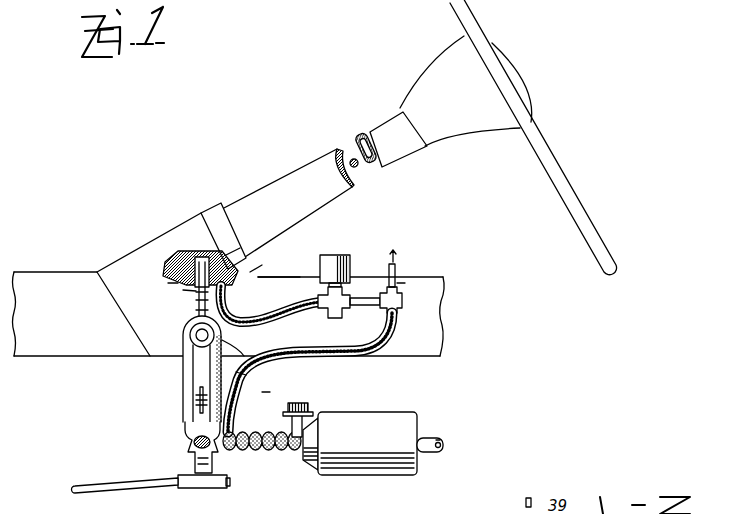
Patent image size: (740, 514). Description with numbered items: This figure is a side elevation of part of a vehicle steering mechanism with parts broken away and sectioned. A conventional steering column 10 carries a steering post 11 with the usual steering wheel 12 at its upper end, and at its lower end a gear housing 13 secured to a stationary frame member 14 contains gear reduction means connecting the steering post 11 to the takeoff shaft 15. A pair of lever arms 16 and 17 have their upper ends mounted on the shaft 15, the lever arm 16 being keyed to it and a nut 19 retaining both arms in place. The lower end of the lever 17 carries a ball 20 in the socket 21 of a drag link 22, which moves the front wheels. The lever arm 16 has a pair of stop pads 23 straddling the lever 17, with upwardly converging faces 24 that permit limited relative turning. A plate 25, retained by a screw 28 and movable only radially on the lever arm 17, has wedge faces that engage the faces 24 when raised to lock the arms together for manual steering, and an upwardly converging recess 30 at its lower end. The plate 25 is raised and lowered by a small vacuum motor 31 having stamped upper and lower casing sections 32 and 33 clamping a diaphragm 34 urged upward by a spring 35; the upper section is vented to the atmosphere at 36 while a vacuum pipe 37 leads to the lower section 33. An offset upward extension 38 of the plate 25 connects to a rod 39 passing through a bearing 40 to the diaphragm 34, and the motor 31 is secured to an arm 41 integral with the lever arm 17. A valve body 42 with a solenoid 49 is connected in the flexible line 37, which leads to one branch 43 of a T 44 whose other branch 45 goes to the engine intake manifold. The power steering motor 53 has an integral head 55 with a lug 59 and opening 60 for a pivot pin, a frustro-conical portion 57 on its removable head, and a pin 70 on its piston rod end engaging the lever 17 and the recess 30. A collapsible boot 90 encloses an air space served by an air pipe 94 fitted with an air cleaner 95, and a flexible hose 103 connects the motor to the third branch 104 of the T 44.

The steering column 10 is at (293, 175).
The steering post 11 is at (358, 167).
The steering wheel 12 is at (612, 250).
The gear housing 13 is at (140, 245).
The frame member 14 is at (52, 270).
The takeoff shaft 15 is at (181, 357).
The lever arm 16 is at (244, 355).
The lever arm 17 is at (190, 378).
The nut 19 is at (189, 333).
The ball 20 is at (200, 489).
The socket 21 is at (227, 489).
The drag link 22 is at (110, 482).
The stop pads 23 is at (190, 408).
The converging faces 24 is at (196, 420).
The plate 25 is at (191, 430).
The screw 28 is at (268, 389).
The recess 30 is at (193, 443).
The fluid pressure motor 31 is at (192, 247).
The upper casing section 32 is at (212, 250).
The lower casing section 33 is at (253, 272).
The diaphragm 34 is at (238, 291).
The spring 35 is at (178, 283).
The vent 36 is at (232, 257).
The vacuum pipe 37 is at (258, 277).
The upward extension 38 is at (243, 373).
The rod 39 is at (196, 310).
The bearing 40 is at (183, 292).
The arm 41 is at (196, 304).
The valve body 42 is at (326, 312).
The branch 43 is at (388, 273).
The T 44 is at (402, 296).
The branch 45 is at (406, 280).
The solenoid 49 is at (321, 266).
The motor 53 is at (404, 410).
The head 55 is at (419, 420).
The frustro-conical portion 57 is at (305, 465).
The lug 59 is at (443, 440).
The opening 60 is at (438, 450).
The pin 70 is at (196, 460).
The boot 90 is at (262, 452).
The air pipe 94 is at (304, 427).
The air cleaner 95 is at (305, 406).
The flexible hose 103 is at (268, 353).
The third branch 104 is at (351, 316).